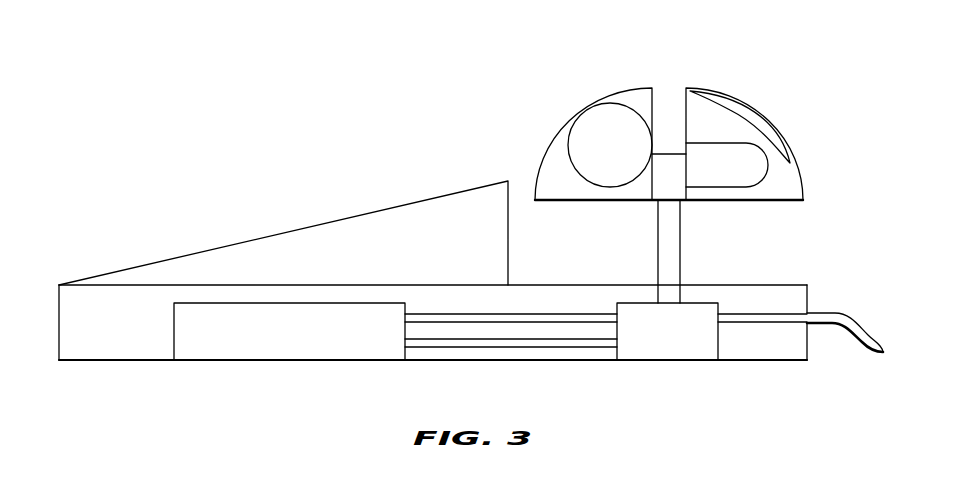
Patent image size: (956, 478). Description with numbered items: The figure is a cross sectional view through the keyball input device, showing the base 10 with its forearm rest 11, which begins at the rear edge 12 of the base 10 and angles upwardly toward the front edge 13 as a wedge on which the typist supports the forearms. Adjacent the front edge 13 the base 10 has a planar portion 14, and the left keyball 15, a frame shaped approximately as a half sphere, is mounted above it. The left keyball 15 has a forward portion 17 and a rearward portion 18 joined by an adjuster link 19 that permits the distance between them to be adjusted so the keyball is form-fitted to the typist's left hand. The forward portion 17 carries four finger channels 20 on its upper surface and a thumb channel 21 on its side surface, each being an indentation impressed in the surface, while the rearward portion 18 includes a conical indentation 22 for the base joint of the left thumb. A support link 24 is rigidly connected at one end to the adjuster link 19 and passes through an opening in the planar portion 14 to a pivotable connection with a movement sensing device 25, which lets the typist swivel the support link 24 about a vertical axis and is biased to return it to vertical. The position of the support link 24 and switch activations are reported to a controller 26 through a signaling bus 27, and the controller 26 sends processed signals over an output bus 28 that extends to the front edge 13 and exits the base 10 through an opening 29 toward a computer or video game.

The base 10 is at (597, 383).
The forearm rest 11 is at (338, 220).
The rear edge 12 is at (59, 313).
The front edge 13 is at (810, 348).
The planar portion 14 is at (537, 286).
The left keyball 15 is at (583, 73).
The forward portion 17 is at (804, 176).
The rearward portion 18 is at (547, 157).
The adjuster link 19 is at (667, 167).
The finger channels 20 is at (758, 125).
The thumb channel 21 is at (726, 173).
The conical indentation 22 is at (602, 170).
The support link 24 is at (670, 256).
The movement sensing device 25 is at (680, 349).
The controller 26 is at (268, 340).
The signaling bus 27 is at (485, 345).
The output bus 28 is at (533, 318).
The opening 29 is at (808, 313).